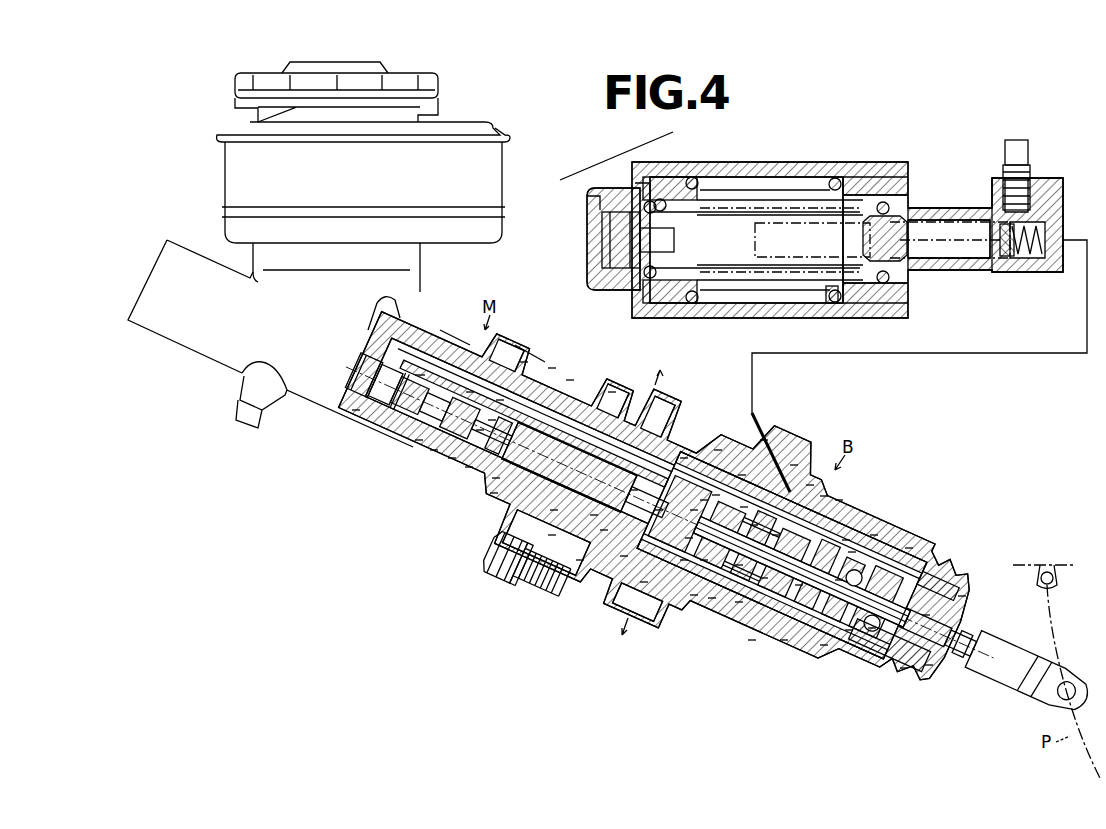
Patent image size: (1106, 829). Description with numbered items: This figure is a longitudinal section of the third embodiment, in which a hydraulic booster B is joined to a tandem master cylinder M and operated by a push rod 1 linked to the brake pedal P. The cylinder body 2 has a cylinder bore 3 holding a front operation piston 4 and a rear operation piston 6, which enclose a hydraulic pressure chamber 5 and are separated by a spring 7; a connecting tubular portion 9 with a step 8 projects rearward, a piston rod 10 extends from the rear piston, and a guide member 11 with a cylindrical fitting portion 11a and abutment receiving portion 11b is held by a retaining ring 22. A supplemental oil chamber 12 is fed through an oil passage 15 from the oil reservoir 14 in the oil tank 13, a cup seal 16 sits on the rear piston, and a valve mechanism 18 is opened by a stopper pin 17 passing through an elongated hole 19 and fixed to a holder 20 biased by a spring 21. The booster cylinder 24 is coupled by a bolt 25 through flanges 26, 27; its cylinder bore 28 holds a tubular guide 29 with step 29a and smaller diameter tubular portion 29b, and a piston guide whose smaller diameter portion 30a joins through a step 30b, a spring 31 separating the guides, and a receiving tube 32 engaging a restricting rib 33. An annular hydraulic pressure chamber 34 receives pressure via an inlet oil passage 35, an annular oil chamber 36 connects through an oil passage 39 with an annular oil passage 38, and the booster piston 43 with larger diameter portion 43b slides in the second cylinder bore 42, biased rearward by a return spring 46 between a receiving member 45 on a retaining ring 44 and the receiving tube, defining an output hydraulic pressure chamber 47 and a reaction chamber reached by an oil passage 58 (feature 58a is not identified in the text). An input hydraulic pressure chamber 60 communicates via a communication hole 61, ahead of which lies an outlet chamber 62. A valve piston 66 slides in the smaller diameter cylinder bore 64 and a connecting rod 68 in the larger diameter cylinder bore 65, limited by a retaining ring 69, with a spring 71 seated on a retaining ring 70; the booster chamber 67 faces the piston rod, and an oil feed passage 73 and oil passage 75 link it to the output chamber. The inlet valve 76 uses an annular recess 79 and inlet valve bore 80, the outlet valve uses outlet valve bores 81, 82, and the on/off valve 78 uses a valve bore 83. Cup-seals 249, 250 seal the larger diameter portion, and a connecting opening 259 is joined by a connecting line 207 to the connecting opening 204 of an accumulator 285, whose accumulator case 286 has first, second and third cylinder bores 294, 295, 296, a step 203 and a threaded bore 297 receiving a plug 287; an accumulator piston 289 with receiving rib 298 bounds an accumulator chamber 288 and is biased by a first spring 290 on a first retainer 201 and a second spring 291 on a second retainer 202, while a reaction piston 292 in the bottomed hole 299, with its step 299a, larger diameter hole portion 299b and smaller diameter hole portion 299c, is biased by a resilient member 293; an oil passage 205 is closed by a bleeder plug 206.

The push rod 1 is at (1008, 643).
The cylinder body 2 is at (306, 395).
The cylinder bore 3 is at (352, 410).
The front operation piston 4 is at (346, 352).
The hydraulic pressure chamber 5 is at (381, 386).
The rear operation piston 6 is at (448, 458).
The spring 7 is at (415, 440).
The step 8 is at (492, 478).
The connecting tubular portion 9 is at (490, 493).
The piston rod 10 is at (552, 462).
The guide member 11 is at (562, 345).
The cylindrical fitting portion 11a is at (522, 364).
The abutment receiving portion 11b is at (549, 372).
The supplemental oil chamber 12 is at (465, 467).
The oil tank 13 is at (414, 285).
The oil reservoir 14 is at (377, 303).
The oil passage 15 is at (452, 338).
The cup seal 16 is at (430, 450).
The stopper pin 17 is at (480, 432).
The valve mechanism 18 is at (420, 375).
The elongated hole 19 is at (492, 420).
The cylindrical holder 20 is at (470, 392).
The spring 21 is at (500, 400).
The retaining ring 22 is at (570, 380).
The booster cylinder 24 is at (810, 485).
The bolt 25 is at (489, 552).
The flange 26 is at (540, 590).
The flange 27 is at (513, 580).
The cylinder bore 28 is at (690, 595).
The tubular guide 29 is at (612, 392).
The step 29a is at (548, 535).
The smaller diameter tubular portion 29b is at (550, 510).
The cylindrical smaller diameter portion 30a is at (600, 530).
The step 30b is at (744, 470).
The spring 31 is at (708, 598).
The receiving tube 32 is at (872, 535).
The restricting rib 33 is at (912, 549).
The annular hydraulic pressure chamber 34 is at (718, 450).
The inlet oil passage 35 is at (640, 582).
The annular oil chamber 36 is at (576, 560).
The annular oil passage 38 is at (620, 556).
The oil passage 39 is at (590, 515).
The second cylinder bore 42 is at (820, 496).
The booster piston 43 is at (845, 630).
The larger diameter portion 43b is at (780, 640).
The retaining ring 44 is at (958, 596).
The receiving member 45 is at (925, 665).
The return spring 46 is at (900, 668).
The annular output hydraulic pressure chamber 47 is at (842, 491).
The oil passage 58 is at (795, 462).
The boss portion 58a is at (868, 628).
The annular input hydraulic pressure chamber 60 is at (700, 560).
The communication hole 61 is at (680, 560).
The annular outlet chamber 62 is at (680, 458).
The front smaller diameter cylinder bore 64 is at (735, 565).
The rear larger diameter cylinder bore 65 is at (848, 552).
The valve piston 66 is at (715, 494).
The booster chamber 67 is at (690, 510).
The connecting rod 68 is at (835, 580).
The retaining ring 69 is at (922, 615).
The retaining ring 70 is at (630, 490).
The spring 71 is at (795, 585).
The oil feed passage 73 is at (655, 510).
The oil passage 75 is at (848, 535).
The inlet valve 76 is at (735, 602).
The on/off valve 78 is at (760, 578).
The annular recess 79 is at (753, 522).
The inlet valve bore 80 is at (742, 504).
The first outlet valve bore 81 is at (685, 538).
The second outlet valve bore 82 is at (704, 496).
The valve bore 83 is at (776, 531).
The first retainer 201 is at (625, 262).
The second retainer 202 is at (850, 298).
The step 203 is at (855, 176).
The connecting opening 204 is at (1047, 270).
The oil passage 205 is at (1018, 236).
The bleeder plug 206 is at (1030, 163).
The connecting line 207 is at (952, 353).
The cup-seal 249 is at (748, 640).
The cup-seal 250 is at (820, 645).
The connecting opening 259 is at (760, 440).
The accumulator 285 is at (834, 176).
The accumulator case 286 is at (781, 166).
The cylindrical bottomed plug 287 is at (590, 256).
The accumulator chamber 288 is at (1010, 270).
The accumulator piston 289 is at (940, 216).
The first coiled-spring 290 is at (884, 285).
The second coiled-spring 291 is at (826, 305).
The reaction piston 292 is at (674, 243).
The resilient member 293 is at (603, 226).
The first cylinder bore 294 is at (970, 264).
The second cylinder bore 295 is at (886, 200).
The third cylinder bore 296 is at (741, 176).
The threaded bore 297 is at (674, 310).
The receiving rib 298 is at (905, 265).
The bottomed hole 299 is at (616, 156).
The step 299a is at (636, 186).
The larger diameter hole portion 299b is at (661, 178).
The smaller diameter hole portion 299c is at (595, 196).